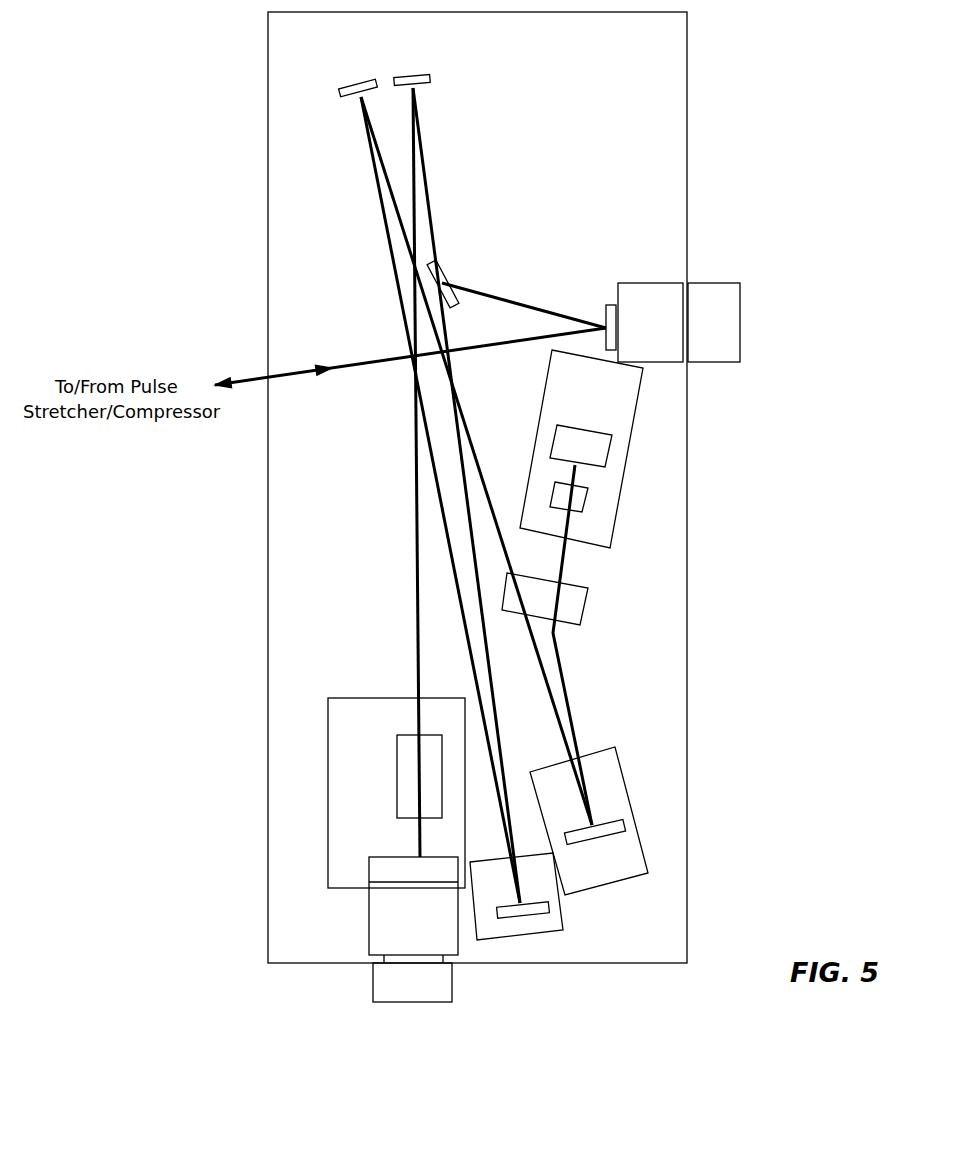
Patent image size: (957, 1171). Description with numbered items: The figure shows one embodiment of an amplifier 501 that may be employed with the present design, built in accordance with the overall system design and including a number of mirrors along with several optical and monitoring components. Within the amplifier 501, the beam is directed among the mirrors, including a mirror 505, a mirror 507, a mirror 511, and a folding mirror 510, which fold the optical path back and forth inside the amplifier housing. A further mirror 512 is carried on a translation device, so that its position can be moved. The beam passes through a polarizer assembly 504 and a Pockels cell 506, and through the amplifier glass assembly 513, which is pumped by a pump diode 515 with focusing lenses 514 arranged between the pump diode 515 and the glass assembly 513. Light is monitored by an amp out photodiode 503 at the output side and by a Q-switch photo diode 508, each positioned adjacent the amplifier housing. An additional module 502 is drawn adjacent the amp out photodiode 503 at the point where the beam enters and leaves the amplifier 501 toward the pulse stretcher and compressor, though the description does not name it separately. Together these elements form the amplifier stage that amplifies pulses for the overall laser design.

The amplifier 501 is at (220, 25).
The output coupler / aperture module 502 is at (644, 322).
The amp out photodiode 503 is at (738, 322).
The polarizer assembly 504 is at (516, 290).
The mirror 505 is at (457, 471).
The Pockels cell 506 is at (392, 773).
The mirror 507 is at (393, 848).
The Q-switch photo diode 508 is at (412, 982).
The folding mirror 510 is at (515, 925).
The mirror 511 is at (447, 478).
The mirror on a translation device 512 is at (614, 839).
The amplifier glass assembly 513 is at (575, 599).
The focusing lenses 514 is at (586, 507).
The pump diode 515 is at (586, 424).